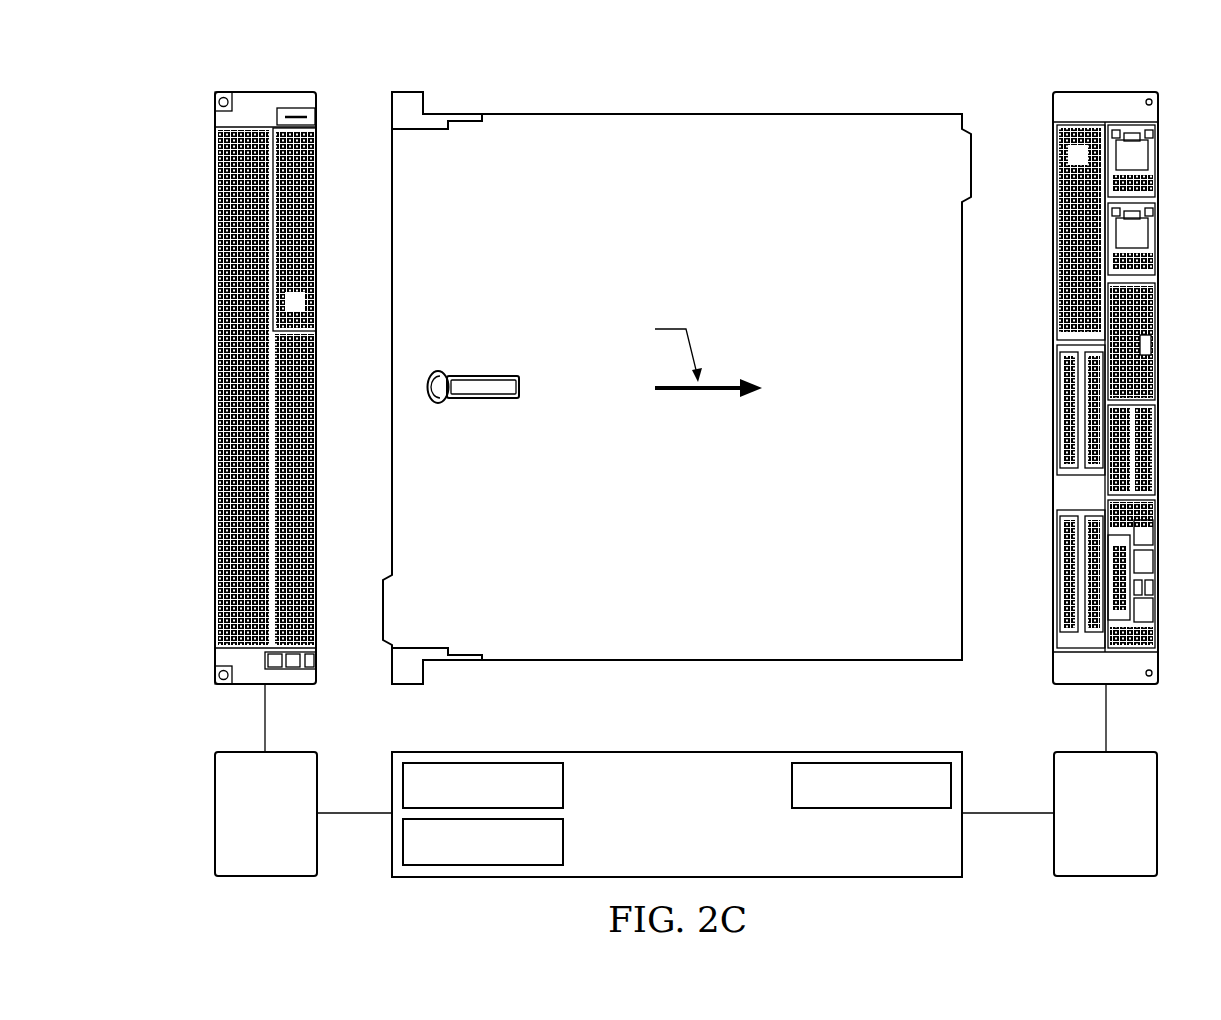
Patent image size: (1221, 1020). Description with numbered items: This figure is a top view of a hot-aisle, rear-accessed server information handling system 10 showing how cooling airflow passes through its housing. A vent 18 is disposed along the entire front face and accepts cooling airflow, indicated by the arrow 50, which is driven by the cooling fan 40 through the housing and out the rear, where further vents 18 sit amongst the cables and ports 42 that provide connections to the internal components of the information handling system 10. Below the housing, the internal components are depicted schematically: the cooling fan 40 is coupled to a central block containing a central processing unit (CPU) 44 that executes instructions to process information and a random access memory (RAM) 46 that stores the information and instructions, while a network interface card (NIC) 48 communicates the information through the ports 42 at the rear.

The server information handling system 10 is at (540, 77).
The vent 18 is at (212, 388).
The arrow 50 is at (797, 118).
The cooling fan 40 is at (250, 846).
The ports 42 is at (1091, 846).
The central processing unit (CPU) 44 is at (563, 785).
The random access memory (RAM) 46 is at (563, 841).
The network interface card (NIC) 48 is at (792, 783).